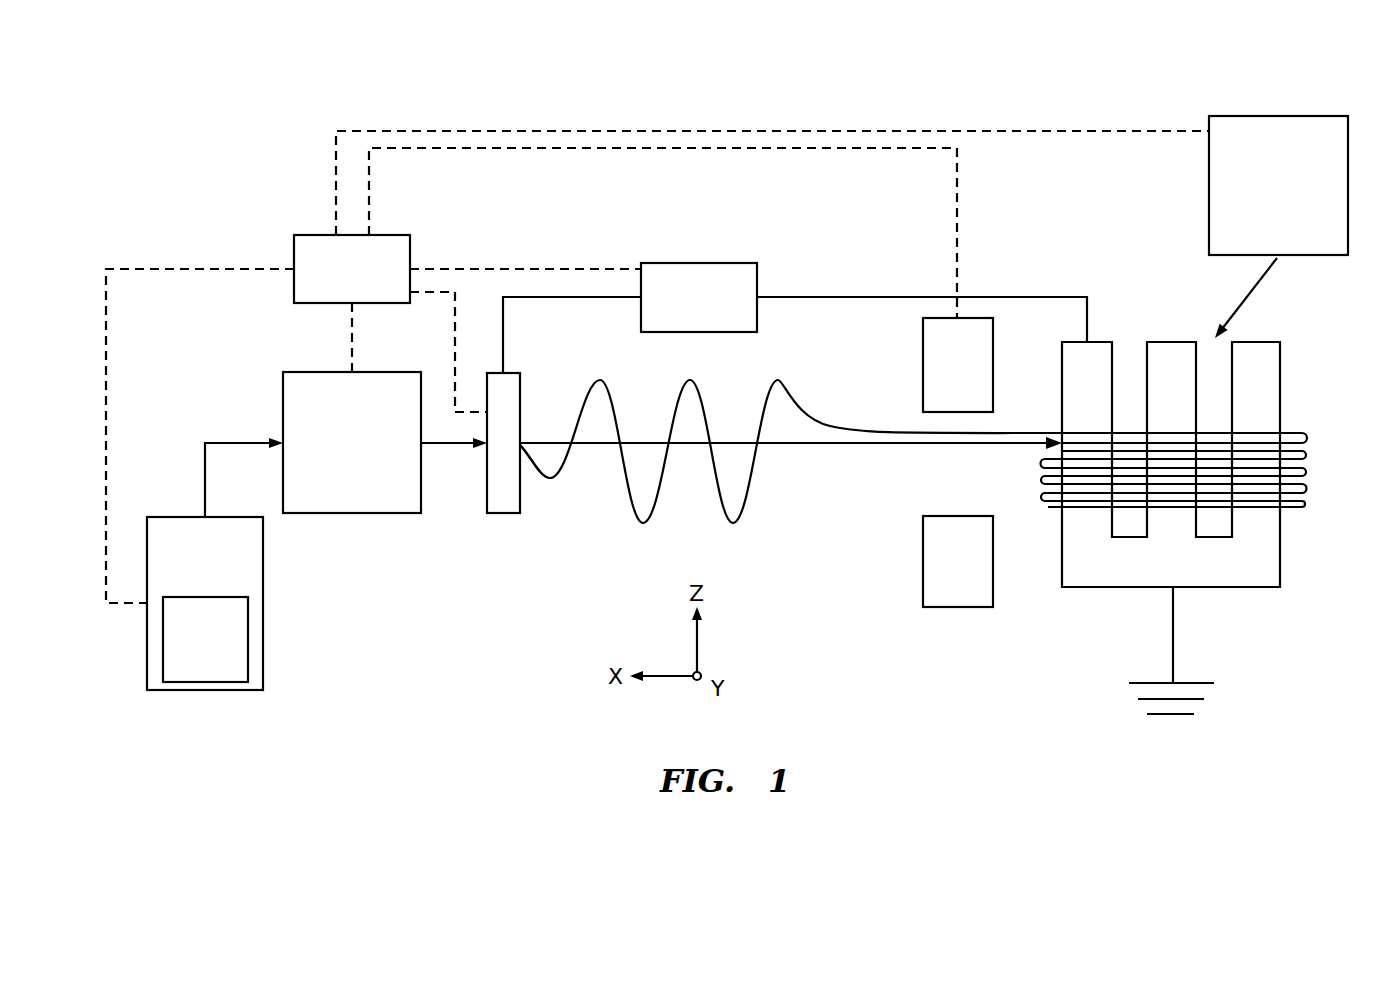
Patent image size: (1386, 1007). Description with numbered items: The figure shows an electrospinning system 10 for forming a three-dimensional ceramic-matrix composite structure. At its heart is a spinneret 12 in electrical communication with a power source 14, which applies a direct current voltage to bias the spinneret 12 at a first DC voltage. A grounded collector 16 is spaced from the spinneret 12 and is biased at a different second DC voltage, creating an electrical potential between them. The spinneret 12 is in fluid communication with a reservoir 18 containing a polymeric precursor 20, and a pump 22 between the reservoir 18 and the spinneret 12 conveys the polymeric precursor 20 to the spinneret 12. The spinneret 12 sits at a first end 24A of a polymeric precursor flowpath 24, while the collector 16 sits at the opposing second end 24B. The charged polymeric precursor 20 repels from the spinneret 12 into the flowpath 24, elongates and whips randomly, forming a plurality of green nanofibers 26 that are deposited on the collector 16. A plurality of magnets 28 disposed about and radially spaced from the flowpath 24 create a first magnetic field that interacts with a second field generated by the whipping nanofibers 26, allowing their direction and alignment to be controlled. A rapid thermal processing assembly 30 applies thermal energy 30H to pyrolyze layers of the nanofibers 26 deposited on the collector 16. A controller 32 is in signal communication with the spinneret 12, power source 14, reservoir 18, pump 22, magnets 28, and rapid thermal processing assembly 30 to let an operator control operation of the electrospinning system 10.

The electrospinning system 10 is at (226, 142).
The spinneret 12 is at (503, 513).
The power source 14 is at (710, 263).
The collector 16 is at (1255, 587).
The reservoir 18 is at (263, 600).
The polymeric precursor 20 is at (220, 652).
The pump 22 is at (354, 513).
The polymeric precursor flowpath 24 is at (857, 447).
The first end 24A is at (534, 420).
The second end 24B is at (1054, 414).
The nanofibers 26 is at (1315, 493).
The magnets 28 is at (923, 360).
The rapid thermal processing assembly 30 is at (1209, 213).
The thermal energy 30H is at (1253, 293).
The controller 32 is at (383, 235).